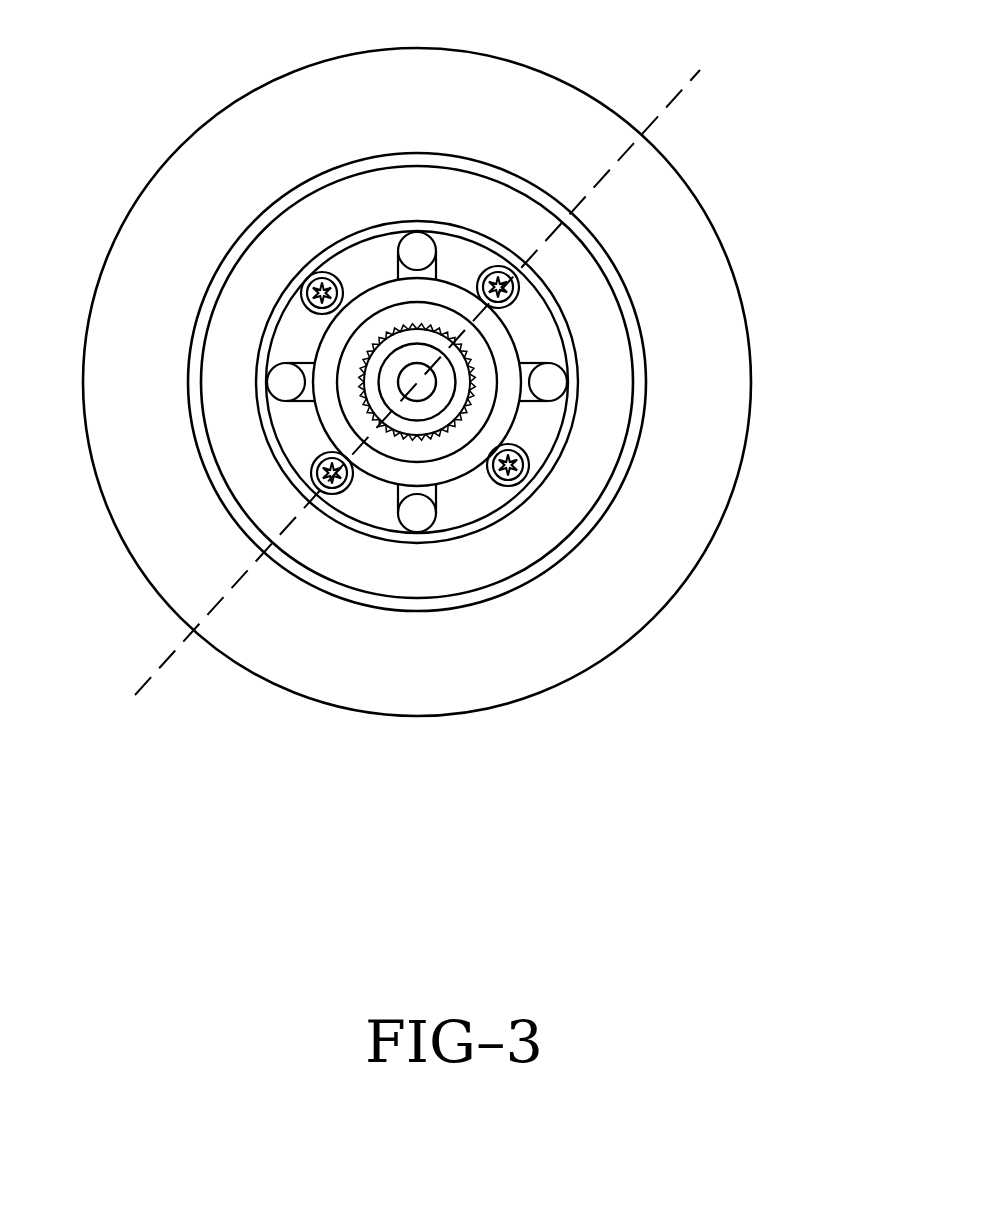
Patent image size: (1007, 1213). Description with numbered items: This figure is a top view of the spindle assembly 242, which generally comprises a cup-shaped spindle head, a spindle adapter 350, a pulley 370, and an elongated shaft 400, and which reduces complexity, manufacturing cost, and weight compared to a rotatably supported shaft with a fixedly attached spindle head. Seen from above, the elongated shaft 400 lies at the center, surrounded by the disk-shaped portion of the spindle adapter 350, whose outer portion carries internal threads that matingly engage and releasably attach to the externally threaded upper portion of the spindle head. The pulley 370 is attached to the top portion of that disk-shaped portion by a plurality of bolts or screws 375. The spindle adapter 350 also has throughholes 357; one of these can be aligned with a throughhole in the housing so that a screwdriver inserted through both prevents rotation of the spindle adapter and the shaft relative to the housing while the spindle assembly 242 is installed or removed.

The spindle assembly 242 is at (752, 304).
The spindle adapter 350 is at (696, 508).
The throughholes 357 is at (283, 392).
The pulley 370 is at (600, 435).
The screws 375 is at (510, 292).
The elongated shaft 400 is at (419, 366).